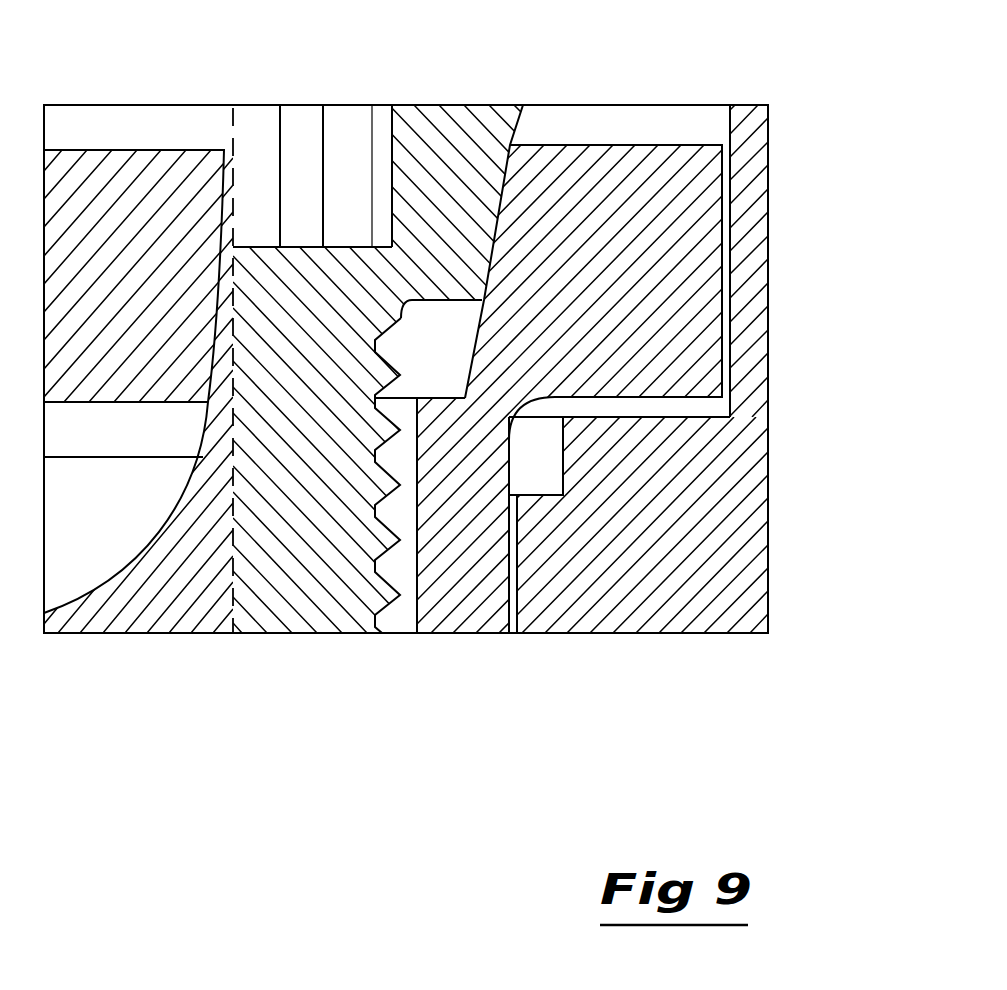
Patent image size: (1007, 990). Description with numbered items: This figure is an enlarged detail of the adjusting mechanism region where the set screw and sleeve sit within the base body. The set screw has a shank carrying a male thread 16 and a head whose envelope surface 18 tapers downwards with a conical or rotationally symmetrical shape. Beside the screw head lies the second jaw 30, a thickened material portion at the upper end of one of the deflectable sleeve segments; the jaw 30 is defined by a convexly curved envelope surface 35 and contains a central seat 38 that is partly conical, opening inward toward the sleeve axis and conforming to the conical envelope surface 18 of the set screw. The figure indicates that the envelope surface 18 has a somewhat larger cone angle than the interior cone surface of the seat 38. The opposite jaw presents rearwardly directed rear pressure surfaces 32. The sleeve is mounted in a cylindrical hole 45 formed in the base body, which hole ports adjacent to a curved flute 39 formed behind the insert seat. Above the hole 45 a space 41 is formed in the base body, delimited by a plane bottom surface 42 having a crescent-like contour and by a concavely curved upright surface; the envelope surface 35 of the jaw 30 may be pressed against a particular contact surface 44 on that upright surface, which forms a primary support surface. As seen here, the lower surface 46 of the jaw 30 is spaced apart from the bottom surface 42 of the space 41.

The male thread 16 is at (385, 603).
The envelope surface 18 is at (520, 122).
The second jaw 30 is at (690, 140).
The rear pressure surface 32 is at (233, 235).
The convexly curved envelope surface 35 is at (727, 218).
The central seat 38 is at (468, 353).
The flute 39 is at (87, 587).
The space 41 is at (710, 407).
The bottom surface 42 is at (656, 414).
The contact surface 44 is at (718, 274).
The cylindrical hole 45 is at (505, 592).
The lower surface 46 is at (675, 398).